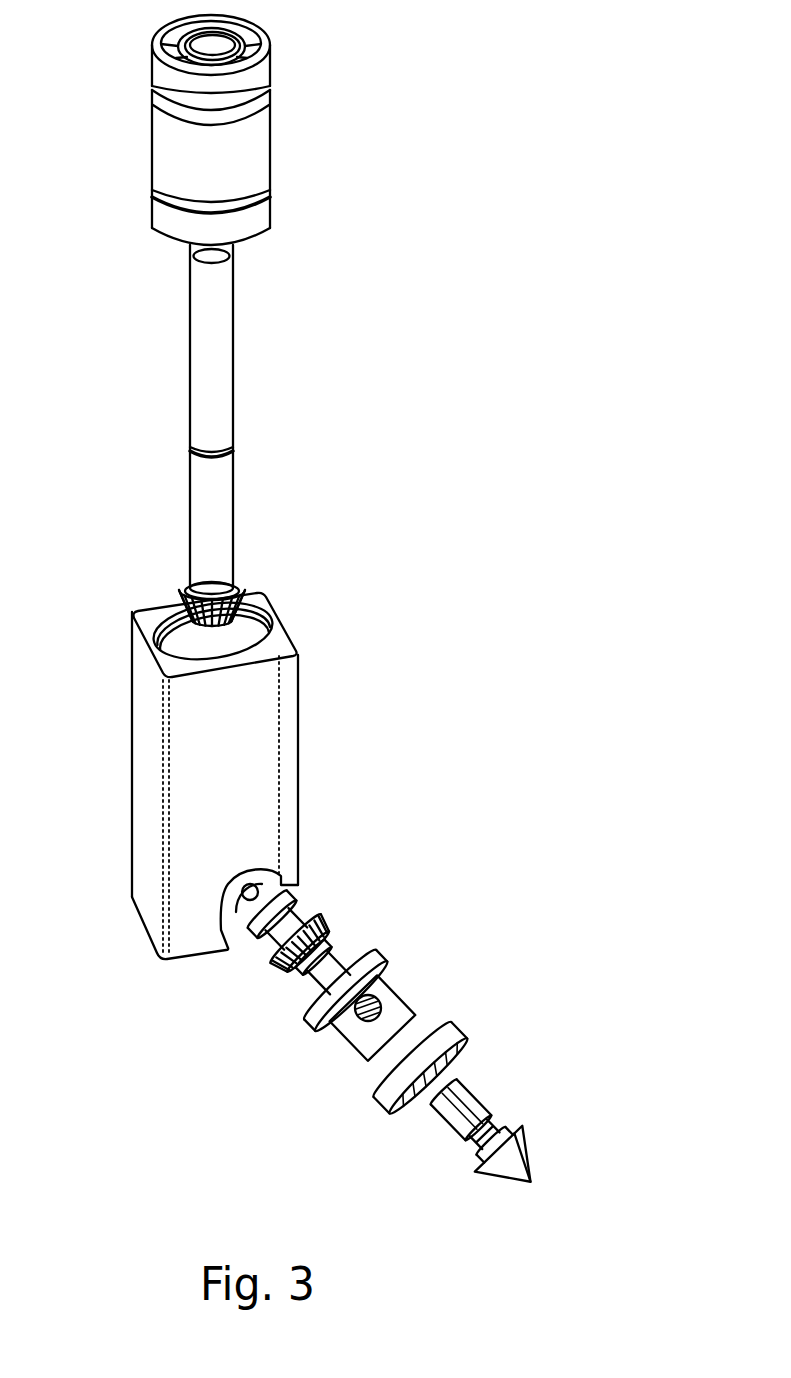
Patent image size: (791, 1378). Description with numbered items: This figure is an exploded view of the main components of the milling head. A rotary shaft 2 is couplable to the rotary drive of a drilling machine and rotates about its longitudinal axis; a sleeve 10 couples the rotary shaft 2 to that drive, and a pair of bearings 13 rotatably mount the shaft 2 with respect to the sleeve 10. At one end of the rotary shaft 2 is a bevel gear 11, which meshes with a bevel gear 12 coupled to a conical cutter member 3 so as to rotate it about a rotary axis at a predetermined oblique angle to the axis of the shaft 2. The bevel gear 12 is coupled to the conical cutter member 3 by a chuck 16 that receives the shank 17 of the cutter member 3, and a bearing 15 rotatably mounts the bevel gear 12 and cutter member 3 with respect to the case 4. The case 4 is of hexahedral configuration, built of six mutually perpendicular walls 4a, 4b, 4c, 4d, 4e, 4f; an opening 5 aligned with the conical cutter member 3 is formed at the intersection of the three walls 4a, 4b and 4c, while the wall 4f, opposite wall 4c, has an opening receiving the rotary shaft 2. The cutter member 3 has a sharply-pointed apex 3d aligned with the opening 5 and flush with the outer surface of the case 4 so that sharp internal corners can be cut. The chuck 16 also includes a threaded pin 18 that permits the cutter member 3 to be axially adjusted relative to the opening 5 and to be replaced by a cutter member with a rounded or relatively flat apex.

The rotary shaft 2 is at (223, 483).
The conical cutter member 3 is at (517, 1143).
The sharply-pointed apex 3d is at (530, 1183).
The case 4 is at (220, 782).
The wall of case 4a is at (188, 950).
The wall of case 4b is at (287, 621).
The wall of case 4c is at (229, 905).
The wall of case 4d is at (135, 767).
The wall of case 4e is at (165, 597).
The wall of case 4f is at (140, 613).
The opening 5 is at (247, 888).
The sleeve 10 is at (160, 140).
The bevel gear 11 is at (243, 584).
The bevel gear 12 is at (320, 915).
The bearings 13 is at (250, 77).
The bearing 15 is at (458, 1028).
The chuck 16 is at (373, 983).
The shank 17 is at (472, 1092).
The threaded pin 18 is at (362, 1020).